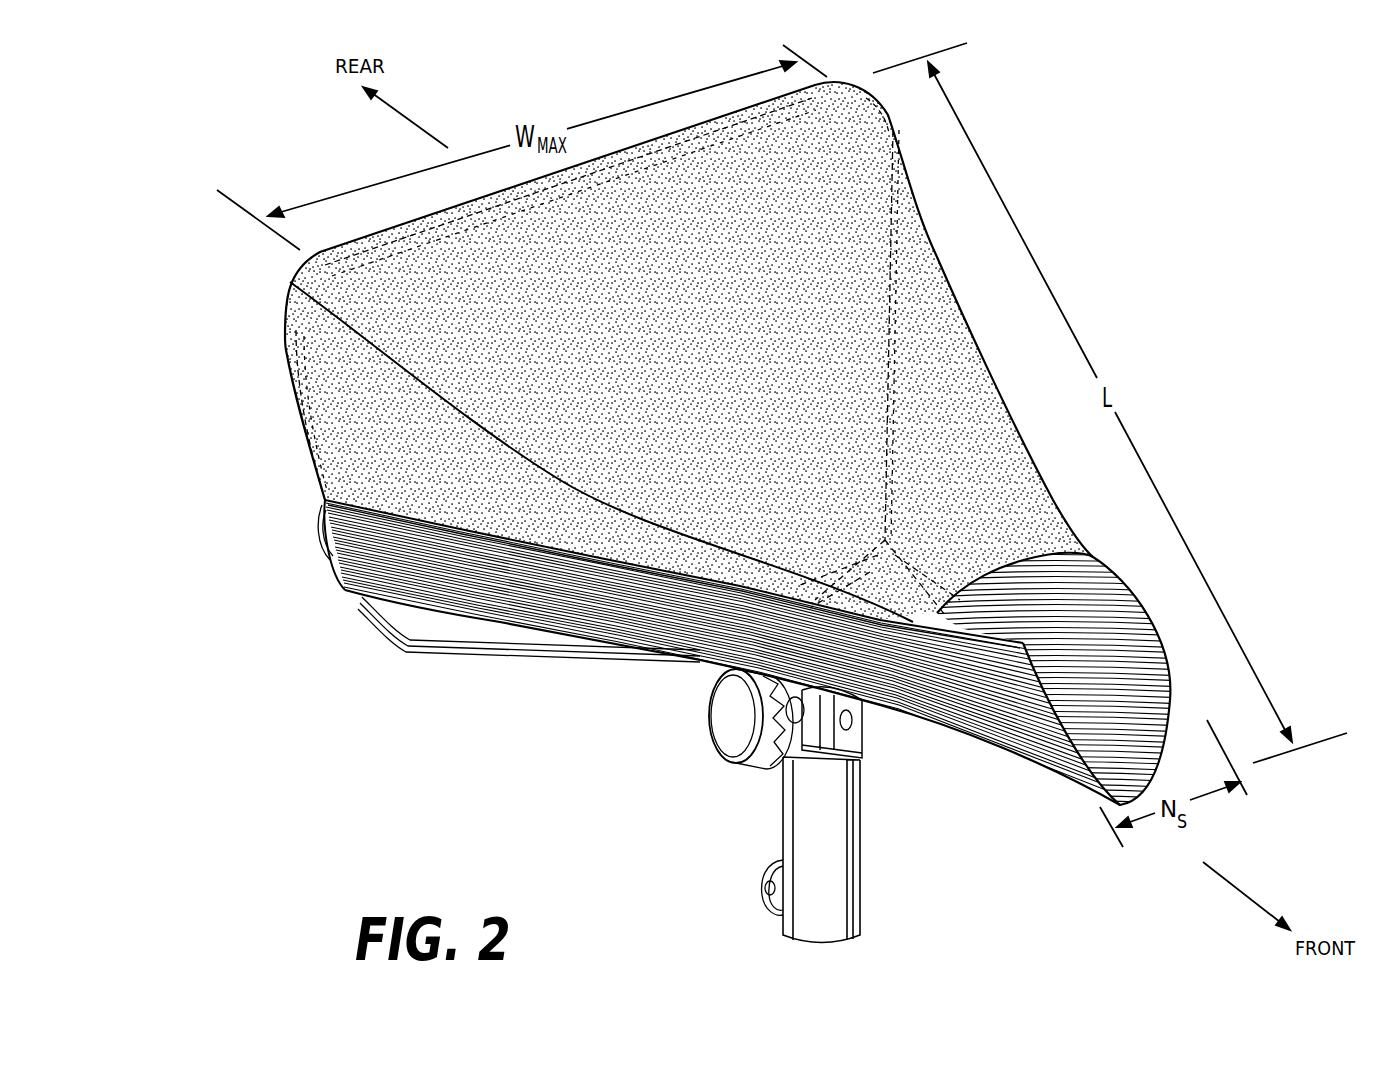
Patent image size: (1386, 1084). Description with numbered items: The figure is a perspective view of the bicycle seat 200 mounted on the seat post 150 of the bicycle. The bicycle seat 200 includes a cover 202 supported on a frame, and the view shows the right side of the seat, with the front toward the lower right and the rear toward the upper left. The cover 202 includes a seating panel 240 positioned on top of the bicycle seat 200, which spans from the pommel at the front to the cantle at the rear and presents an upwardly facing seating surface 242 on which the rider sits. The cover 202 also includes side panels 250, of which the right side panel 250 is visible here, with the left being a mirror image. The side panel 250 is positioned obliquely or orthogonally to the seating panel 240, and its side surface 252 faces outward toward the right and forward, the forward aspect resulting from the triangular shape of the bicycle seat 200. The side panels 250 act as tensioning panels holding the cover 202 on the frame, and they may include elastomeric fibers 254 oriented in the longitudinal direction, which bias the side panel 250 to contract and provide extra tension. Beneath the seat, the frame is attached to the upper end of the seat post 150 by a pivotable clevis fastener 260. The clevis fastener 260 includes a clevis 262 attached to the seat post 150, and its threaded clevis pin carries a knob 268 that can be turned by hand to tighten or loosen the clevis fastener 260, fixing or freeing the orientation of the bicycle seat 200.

The seat post 150 is at (848, 915).
The bicycle seat 200 is at (648, 512).
The cover 202 is at (930, 303).
The seating panel 240 is at (963, 463).
The seating surface 242 is at (714, 402).
The side panel 250 is at (570, 582).
The side surface 252 is at (500, 582).
The elastomeric fibers 254 is at (1007, 737).
The clevis fastener 260 is at (787, 752).
The clevis 262 is at (845, 716).
The knob 268 is at (740, 745).